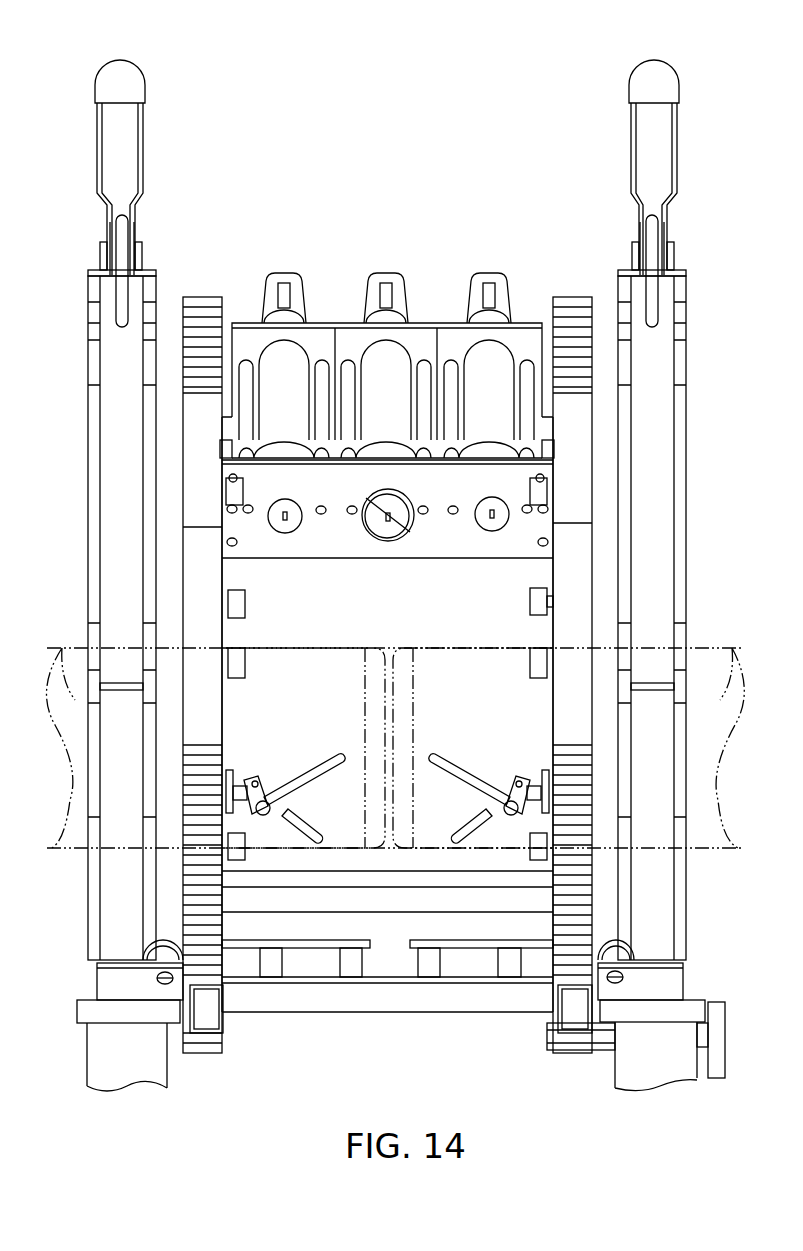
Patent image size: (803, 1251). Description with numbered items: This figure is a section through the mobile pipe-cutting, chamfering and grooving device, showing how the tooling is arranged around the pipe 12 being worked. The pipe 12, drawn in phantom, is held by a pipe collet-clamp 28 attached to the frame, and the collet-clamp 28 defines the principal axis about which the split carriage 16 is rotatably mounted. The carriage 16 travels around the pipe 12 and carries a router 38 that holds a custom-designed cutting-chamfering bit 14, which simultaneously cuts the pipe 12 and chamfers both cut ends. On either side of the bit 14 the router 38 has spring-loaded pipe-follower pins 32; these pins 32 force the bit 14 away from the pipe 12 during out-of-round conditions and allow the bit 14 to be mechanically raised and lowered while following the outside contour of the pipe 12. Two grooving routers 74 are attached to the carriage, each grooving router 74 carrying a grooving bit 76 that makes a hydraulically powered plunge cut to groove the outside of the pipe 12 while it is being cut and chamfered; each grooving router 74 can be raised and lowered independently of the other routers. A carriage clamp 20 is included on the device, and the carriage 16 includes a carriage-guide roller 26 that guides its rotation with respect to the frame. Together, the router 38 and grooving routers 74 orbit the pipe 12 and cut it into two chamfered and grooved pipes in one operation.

The pipe 12 is at (55, 648).
The cutting-chamfering bit 14 is at (389, 524).
The split carriage 16 is at (203, 297).
The carriage clamp 20 is at (265, 792).
The carriage-guide roller 26 is at (150, 950).
The pipe collet-clamp 28 is at (118, 66).
The spring-loaded pipe-follower pins 32 is at (322, 516).
The router 38 is at (362, 336).
The grooving router 74 is at (272, 290).
The grooving bit 76 is at (285, 525).